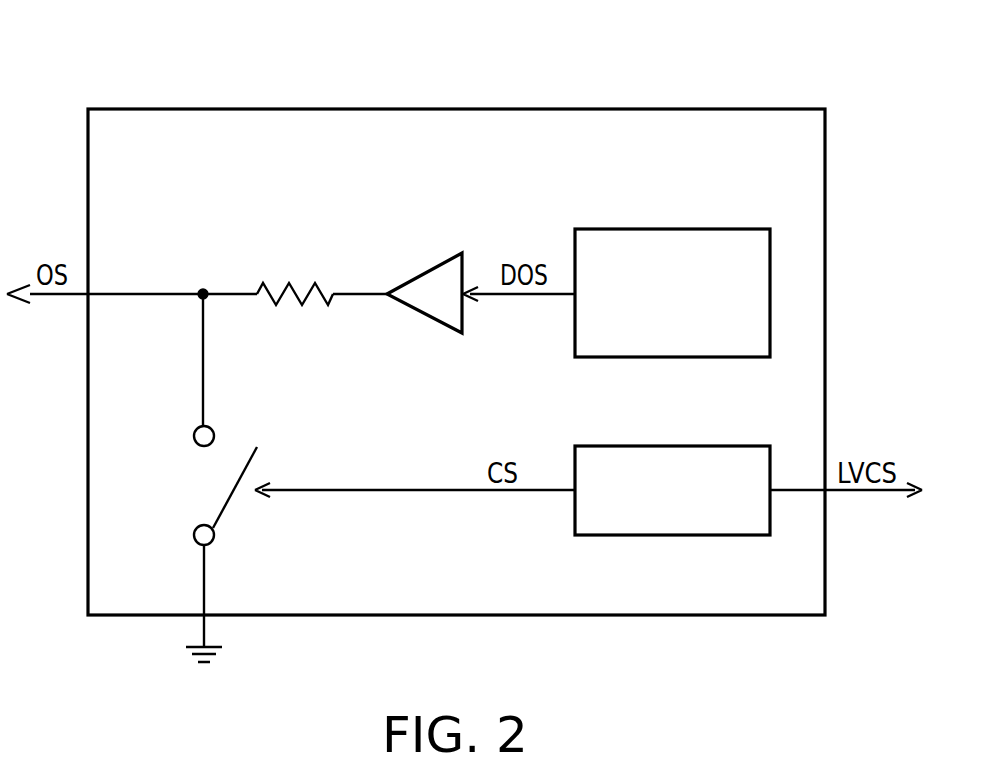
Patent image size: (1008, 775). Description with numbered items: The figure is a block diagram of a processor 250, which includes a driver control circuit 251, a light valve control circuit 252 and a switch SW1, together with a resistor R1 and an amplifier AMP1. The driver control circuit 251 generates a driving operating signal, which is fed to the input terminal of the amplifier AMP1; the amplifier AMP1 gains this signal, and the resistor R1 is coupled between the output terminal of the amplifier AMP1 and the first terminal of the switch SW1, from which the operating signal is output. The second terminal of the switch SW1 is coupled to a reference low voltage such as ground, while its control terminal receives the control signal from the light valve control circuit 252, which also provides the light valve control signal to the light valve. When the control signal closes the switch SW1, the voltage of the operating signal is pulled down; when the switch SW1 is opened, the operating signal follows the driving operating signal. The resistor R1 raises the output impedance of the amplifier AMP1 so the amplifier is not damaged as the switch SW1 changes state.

The processor 250 is at (727, 105).
The driver control circuit 251 is at (727, 227).
The light valve control circuit 252 is at (728, 445).
The switch SW1 is at (197, 482).
The resistor R1 is at (295, 275).
The amplifier AMP1 is at (424, 272).